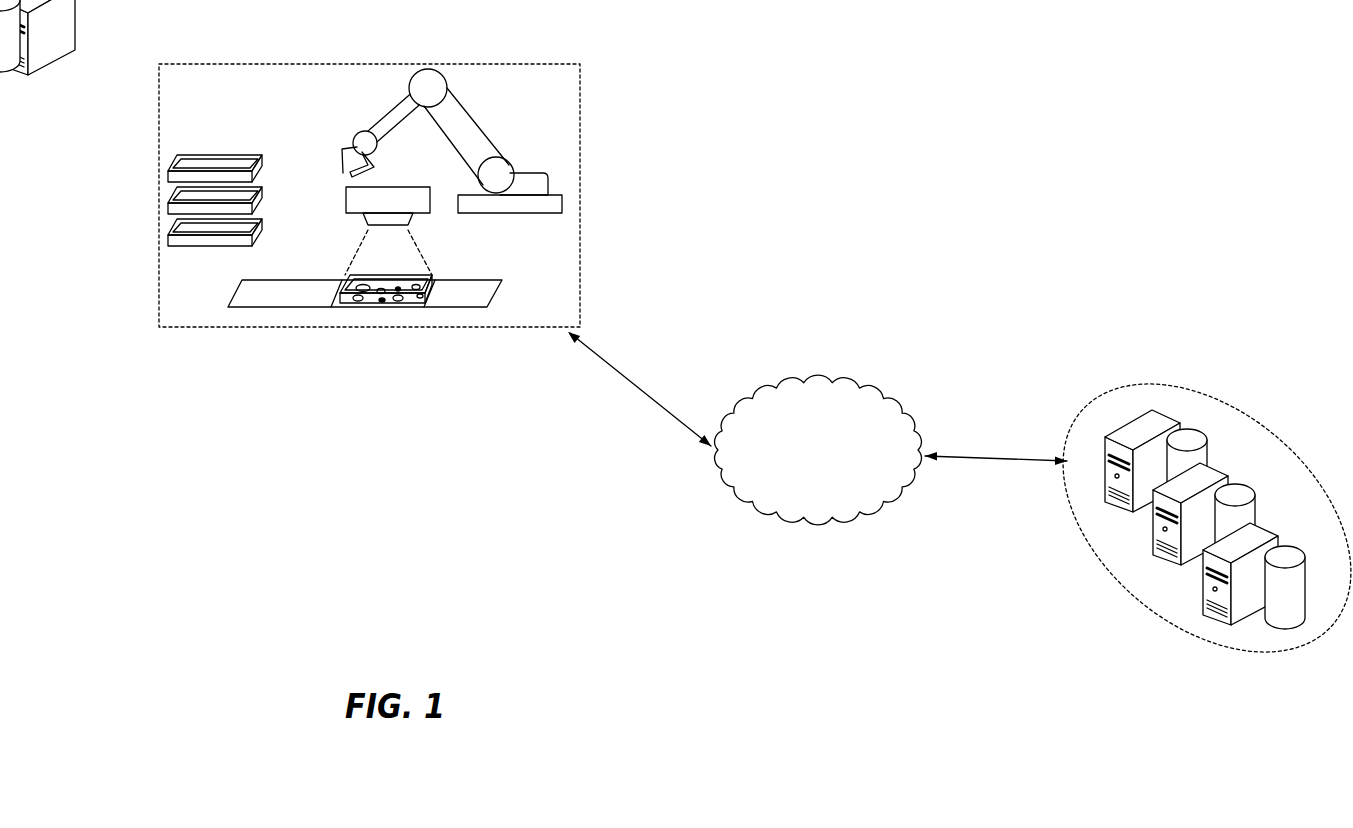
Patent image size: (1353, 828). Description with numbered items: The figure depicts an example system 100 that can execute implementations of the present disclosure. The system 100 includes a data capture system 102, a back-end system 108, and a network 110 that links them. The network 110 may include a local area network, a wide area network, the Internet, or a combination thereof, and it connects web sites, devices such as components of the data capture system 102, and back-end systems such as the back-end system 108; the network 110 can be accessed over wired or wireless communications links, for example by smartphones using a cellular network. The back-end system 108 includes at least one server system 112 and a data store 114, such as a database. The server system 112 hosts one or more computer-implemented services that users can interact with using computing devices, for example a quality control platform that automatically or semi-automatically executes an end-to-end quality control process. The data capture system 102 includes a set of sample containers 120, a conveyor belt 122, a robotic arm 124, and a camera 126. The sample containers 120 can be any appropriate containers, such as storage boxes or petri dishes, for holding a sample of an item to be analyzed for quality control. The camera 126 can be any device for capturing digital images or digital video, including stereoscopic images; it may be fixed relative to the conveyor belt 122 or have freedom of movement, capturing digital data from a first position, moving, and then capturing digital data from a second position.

The system 100 is at (965, 233).
The data capture system 102 is at (580, 122).
The back-end system 108 is at (676, 353).
The network 110 is at (817, 380).
The server system 112 is at (1133, 412).
The data store 114 is at (1187, 428).
The sample containers 120 is at (208, 153).
The conveyor belt 122 is at (460, 278).
The robotic arm 124 is at (470, 115).
The camera 126 is at (346, 214).